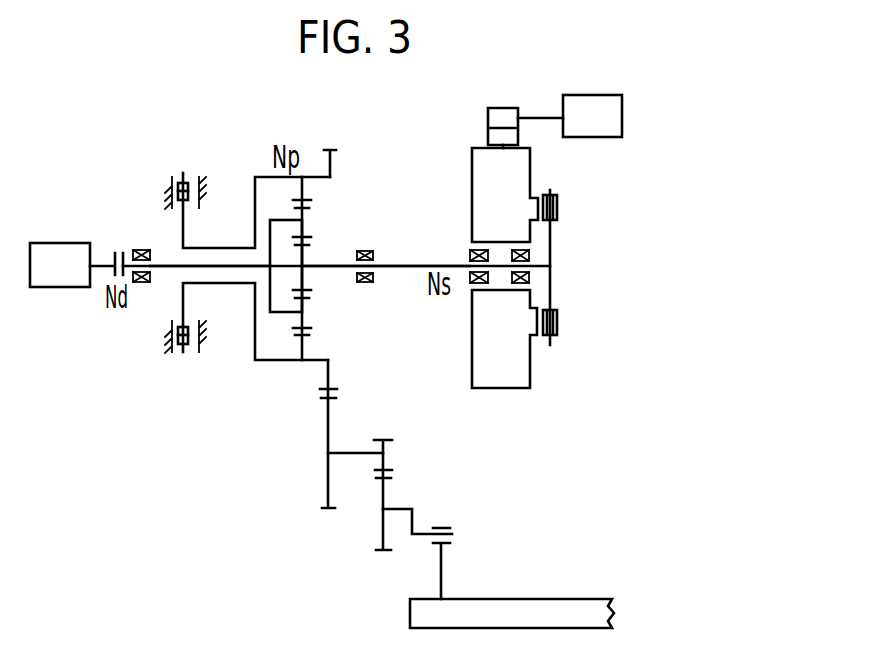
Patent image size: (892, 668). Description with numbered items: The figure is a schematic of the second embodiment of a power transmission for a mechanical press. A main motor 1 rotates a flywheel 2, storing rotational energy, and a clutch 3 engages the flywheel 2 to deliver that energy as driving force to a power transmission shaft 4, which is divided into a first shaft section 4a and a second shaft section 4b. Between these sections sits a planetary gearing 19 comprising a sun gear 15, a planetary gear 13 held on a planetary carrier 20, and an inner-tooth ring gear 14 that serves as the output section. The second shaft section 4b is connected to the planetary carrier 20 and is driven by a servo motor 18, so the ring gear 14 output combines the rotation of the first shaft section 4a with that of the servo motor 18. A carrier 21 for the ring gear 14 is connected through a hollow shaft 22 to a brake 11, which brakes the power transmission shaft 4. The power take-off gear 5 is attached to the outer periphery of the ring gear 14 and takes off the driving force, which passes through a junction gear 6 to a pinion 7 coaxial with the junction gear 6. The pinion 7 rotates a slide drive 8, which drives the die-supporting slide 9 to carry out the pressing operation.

The main motor 1 is at (622, 118).
The flywheel 2 is at (530, 365).
The clutch 3 is at (558, 207).
The power transmission shaft 4 is at (442, 255).
The first shaft section 4a is at (386, 310).
The second shaft section 4b is at (166, 265).
The power take-off gear 5 is at (336, 153).
The junction gear 6 is at (326, 484).
The pinion 7 is at (391, 440).
The slide drive 8 is at (420, 518).
The slide 9 is at (550, 597).
The brake 11 is at (181, 172).
The planetary gear 13 is at (304, 228).
The inner-tooth ring gear 14 is at (304, 190).
The sun gear 15 is at (304, 290).
The servo motor 18 is at (60, 288).
The planetary gearing 19 is at (376, 204).
The planetary carrier 20 is at (277, 313).
The carrier 21 is at (253, 198).
The hollow shaft 22 is at (228, 284).